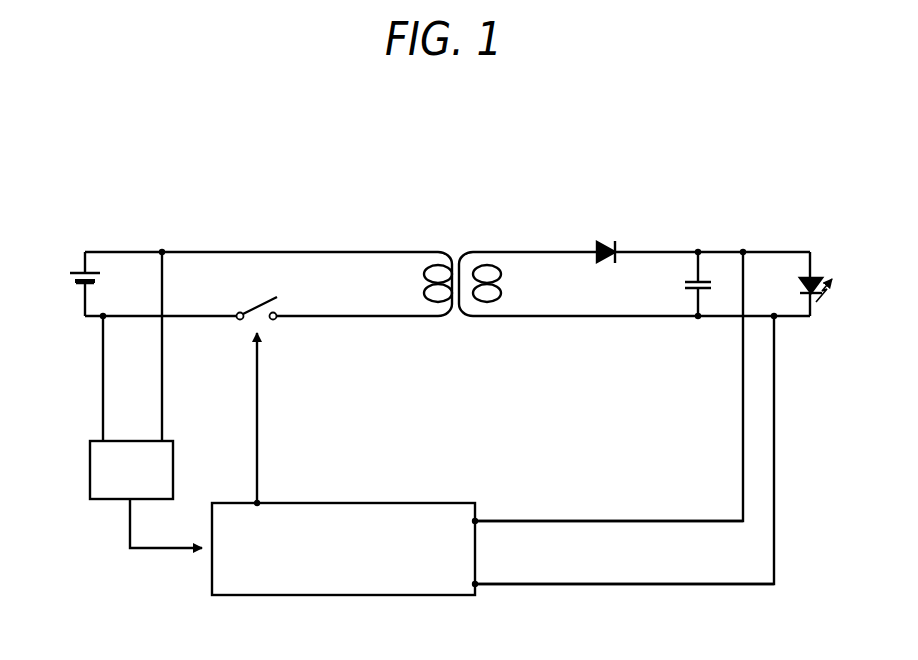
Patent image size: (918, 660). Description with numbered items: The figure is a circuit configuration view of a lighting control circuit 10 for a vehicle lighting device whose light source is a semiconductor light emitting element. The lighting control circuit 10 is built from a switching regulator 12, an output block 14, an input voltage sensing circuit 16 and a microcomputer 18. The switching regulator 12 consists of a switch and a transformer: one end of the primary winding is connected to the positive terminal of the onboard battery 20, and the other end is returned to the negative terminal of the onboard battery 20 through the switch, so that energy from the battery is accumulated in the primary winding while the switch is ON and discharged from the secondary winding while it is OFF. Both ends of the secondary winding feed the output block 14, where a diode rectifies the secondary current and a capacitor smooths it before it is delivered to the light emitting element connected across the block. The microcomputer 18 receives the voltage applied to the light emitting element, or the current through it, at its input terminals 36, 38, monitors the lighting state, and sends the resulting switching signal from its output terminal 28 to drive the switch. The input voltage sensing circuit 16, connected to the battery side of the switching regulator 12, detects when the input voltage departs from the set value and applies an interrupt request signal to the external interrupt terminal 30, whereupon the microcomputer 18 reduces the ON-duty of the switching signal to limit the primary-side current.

The lighting control circuit 10 is at (262, 180).
The switching regulator 12 is at (393, 224).
The output block 14 is at (707, 224).
The input voltage sensing circuit 16 is at (90, 455).
The microcomputer 18 is at (278, 596).
The onboard battery 20 is at (73, 273).
The output terminal 28 is at (258, 500).
The external interrupt terminal 30 is at (210, 551).
The input terminal 36 is at (478, 518).
The input terminal 38 is at (478, 588).